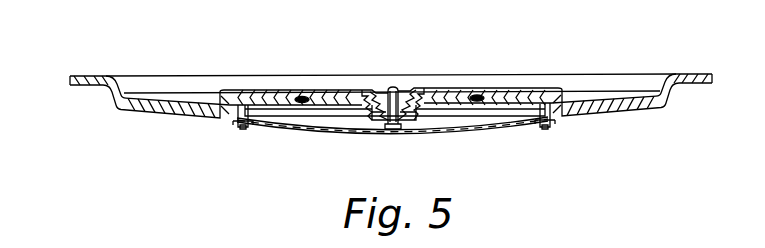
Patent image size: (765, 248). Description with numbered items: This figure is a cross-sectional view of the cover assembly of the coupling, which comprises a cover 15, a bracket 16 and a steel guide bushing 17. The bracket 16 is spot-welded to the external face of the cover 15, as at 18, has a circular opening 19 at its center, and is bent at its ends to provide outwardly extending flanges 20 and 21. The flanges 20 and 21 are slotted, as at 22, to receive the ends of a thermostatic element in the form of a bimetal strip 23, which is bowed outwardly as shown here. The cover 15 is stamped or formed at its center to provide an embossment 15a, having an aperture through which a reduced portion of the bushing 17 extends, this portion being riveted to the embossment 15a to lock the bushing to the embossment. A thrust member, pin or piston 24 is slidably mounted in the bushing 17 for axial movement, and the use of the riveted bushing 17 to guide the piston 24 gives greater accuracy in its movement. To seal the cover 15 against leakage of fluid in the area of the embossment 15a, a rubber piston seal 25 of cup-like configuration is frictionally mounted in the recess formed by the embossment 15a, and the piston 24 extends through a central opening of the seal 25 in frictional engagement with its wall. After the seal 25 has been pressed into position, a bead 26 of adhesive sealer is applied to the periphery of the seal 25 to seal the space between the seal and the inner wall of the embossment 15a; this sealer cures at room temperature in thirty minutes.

The cover 15 is at (624, 110).
The embossment 15a is at (383, 122).
The bracket 16 is at (507, 111).
The steel guide bushing 17 is at (386, 119).
The spot weld 18 is at (302, 104).
The circular opening 19 is at (431, 128).
The flange 20 is at (243, 128).
The flange 21 is at (547, 128).
The slot 22 is at (240, 124).
The bimetal strip 23 is at (396, 130).
The piston 24 is at (393, 87).
The rubber piston seal 25 is at (407, 90).
The bead of adhesive sealer 26 is at (423, 90).